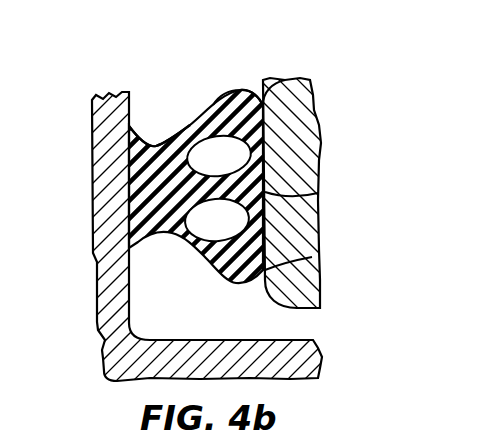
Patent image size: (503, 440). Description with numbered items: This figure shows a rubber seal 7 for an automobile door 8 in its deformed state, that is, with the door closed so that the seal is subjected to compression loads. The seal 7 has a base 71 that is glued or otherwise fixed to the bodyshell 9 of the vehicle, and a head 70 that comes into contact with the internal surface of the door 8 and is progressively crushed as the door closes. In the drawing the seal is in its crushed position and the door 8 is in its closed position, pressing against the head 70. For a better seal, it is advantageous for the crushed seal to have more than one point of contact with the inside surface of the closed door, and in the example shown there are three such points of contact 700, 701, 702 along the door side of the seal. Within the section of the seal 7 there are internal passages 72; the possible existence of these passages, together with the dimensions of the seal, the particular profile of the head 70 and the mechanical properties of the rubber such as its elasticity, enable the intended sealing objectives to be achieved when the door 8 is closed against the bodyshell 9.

The rubber seal 7 is at (251, 220).
The head 70 is at (243, 92).
The base 71 is at (178, 87).
The internal passages 72 is at (181, 200).
The point of contact 700 is at (283, 79).
The point of contact 701 is at (318, 193).
The point of contact 702 is at (312, 257).
The automobile door 8 is at (316, 122).
The bodyshell 9 is at (97, 313).